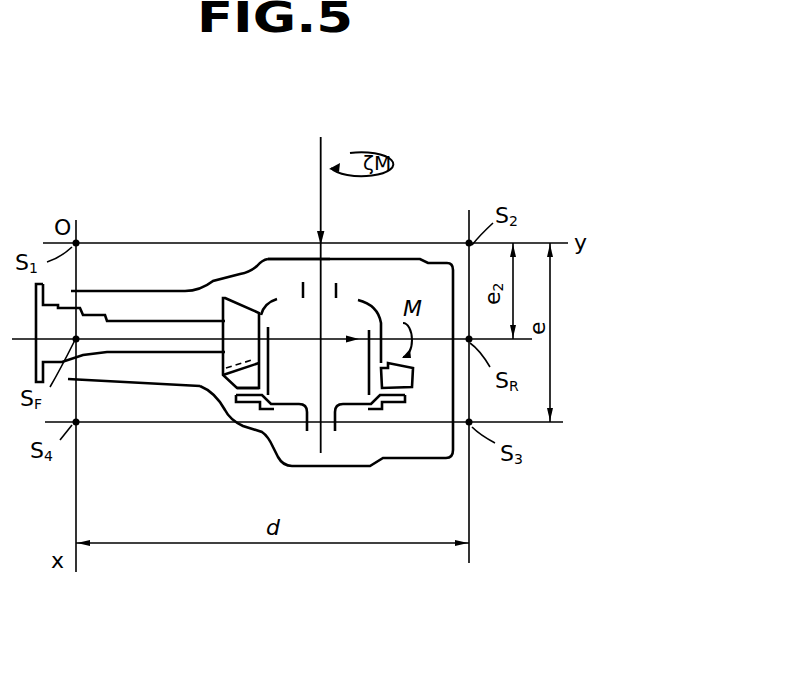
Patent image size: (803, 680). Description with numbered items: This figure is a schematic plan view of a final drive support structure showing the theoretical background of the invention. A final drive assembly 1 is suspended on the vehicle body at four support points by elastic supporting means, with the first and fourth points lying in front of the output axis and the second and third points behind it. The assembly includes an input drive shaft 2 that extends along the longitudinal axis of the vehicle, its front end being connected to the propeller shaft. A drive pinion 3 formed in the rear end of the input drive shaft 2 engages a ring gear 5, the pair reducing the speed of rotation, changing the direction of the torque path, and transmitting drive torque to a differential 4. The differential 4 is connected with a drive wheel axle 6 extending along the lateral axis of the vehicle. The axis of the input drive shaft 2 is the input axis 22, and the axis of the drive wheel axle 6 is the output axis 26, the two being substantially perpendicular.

The final drive assembly 1 is at (403, 462).
The input drive shaft 2 is at (152, 343).
The drive pinion 3 is at (235, 303).
The differential 4 is at (270, 300).
The ring gear 5 is at (242, 380).
The drive wheel axle 6 is at (330, 131).
The input axis 22 is at (175, 337).
The output axis 26 is at (315, 263).